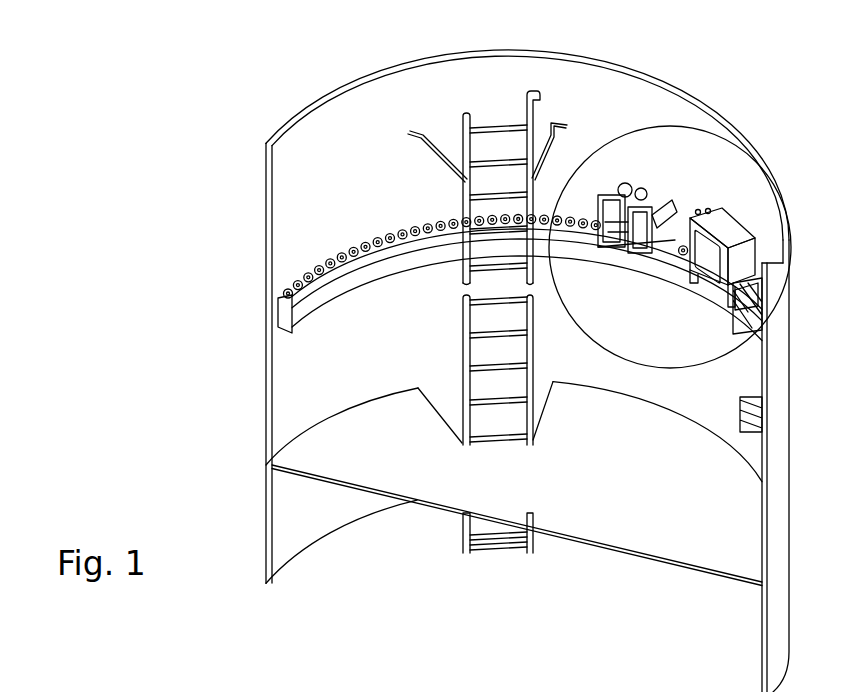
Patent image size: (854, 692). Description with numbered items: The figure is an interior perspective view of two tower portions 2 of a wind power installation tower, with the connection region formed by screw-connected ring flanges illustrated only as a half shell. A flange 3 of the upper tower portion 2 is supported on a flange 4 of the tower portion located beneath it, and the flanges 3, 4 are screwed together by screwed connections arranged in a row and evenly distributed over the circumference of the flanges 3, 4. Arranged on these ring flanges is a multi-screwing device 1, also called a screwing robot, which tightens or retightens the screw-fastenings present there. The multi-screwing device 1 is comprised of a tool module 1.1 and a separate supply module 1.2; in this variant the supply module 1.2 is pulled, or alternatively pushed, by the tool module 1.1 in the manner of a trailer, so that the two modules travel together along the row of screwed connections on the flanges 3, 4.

The multi-screwing device 1 is at (651, 328).
The tool module 1.1 is at (652, 176).
The supply module 1.2 is at (736, 206).
The tower portion 2 is at (309, 146).
The flange 3 is at (278, 312).
The flange 4 is at (282, 325).